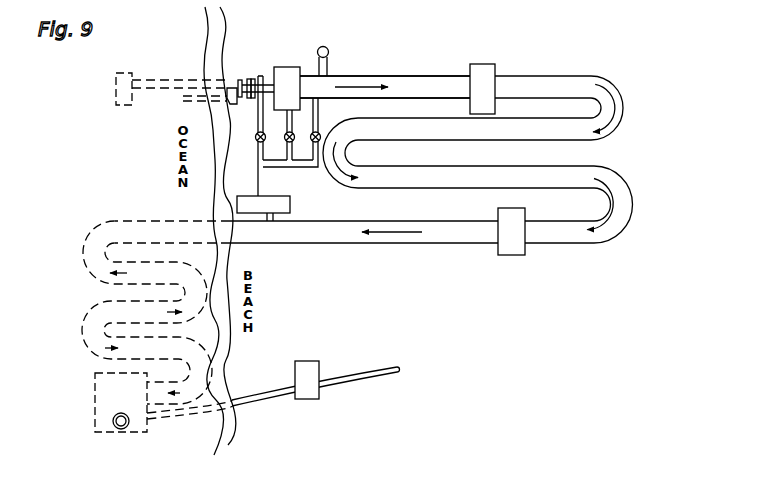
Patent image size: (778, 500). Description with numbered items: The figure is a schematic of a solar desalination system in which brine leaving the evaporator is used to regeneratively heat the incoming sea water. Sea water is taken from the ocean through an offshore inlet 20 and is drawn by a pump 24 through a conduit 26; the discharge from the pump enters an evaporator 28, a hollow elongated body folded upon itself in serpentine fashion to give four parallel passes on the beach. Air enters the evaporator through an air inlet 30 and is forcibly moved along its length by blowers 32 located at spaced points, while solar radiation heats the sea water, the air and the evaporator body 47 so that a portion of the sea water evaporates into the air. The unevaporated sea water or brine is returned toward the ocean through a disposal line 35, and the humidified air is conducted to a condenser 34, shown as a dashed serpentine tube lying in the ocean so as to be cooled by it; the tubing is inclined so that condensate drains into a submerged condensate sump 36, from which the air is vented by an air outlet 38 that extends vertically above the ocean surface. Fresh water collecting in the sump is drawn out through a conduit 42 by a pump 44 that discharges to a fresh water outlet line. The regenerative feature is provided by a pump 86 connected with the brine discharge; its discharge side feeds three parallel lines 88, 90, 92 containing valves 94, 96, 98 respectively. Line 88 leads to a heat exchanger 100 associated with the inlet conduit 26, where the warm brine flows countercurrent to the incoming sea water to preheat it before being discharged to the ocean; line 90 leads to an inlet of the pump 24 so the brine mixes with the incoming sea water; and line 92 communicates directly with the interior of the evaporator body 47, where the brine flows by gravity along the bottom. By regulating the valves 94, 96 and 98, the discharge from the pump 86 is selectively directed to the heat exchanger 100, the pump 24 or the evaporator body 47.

The inlet 20 is at (116, 104).
The pump 24 is at (289, 67).
The conduit 26 is at (239, 78).
The evaporator 28 is at (557, 73).
The air inlet 30 is at (329, 50).
The blowers 32 is at (490, 64).
The condenser 34 is at (82, 248).
The disposal line 35 is at (275, 218).
The condensate sump 36 is at (95, 388).
The air outlet 38 is at (126, 430).
The conduit 42 is at (258, 398).
The pump 44 is at (312, 361).
The evaporator body 47 is at (367, 76).
The pump 86 is at (290, 200).
The line 88 is at (258, 130).
The line 90 is at (287, 125).
The line 92 is at (318, 122).
The valve 94 is at (258, 143).
The valve 96 is at (287, 143).
The valve 98 is at (321, 137).
The heat exchanger 100 is at (262, 76).